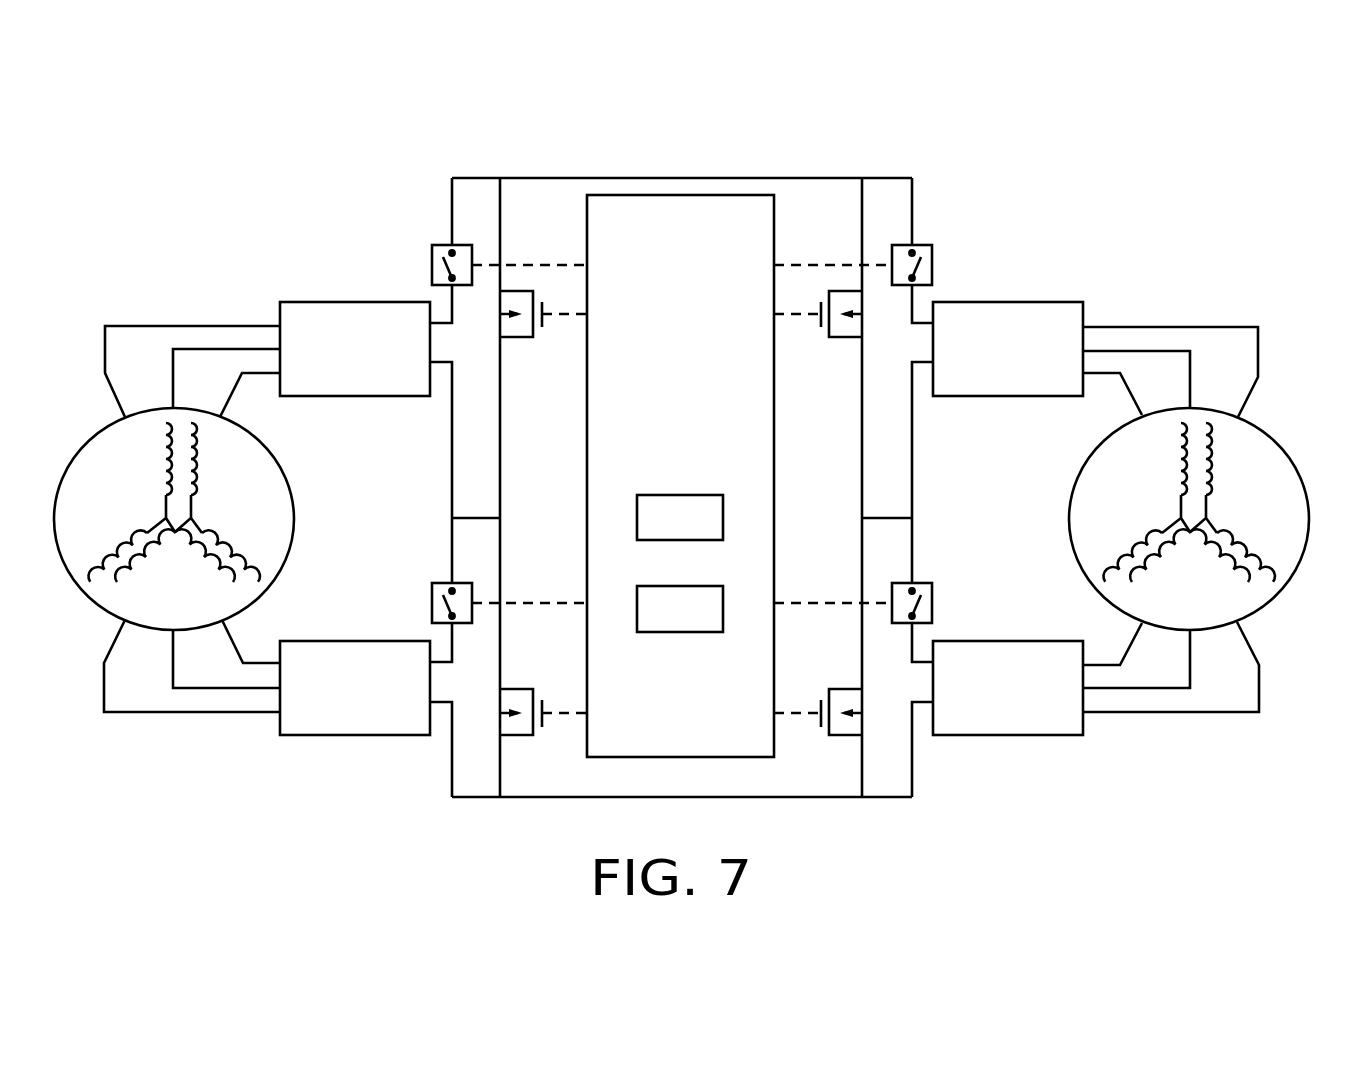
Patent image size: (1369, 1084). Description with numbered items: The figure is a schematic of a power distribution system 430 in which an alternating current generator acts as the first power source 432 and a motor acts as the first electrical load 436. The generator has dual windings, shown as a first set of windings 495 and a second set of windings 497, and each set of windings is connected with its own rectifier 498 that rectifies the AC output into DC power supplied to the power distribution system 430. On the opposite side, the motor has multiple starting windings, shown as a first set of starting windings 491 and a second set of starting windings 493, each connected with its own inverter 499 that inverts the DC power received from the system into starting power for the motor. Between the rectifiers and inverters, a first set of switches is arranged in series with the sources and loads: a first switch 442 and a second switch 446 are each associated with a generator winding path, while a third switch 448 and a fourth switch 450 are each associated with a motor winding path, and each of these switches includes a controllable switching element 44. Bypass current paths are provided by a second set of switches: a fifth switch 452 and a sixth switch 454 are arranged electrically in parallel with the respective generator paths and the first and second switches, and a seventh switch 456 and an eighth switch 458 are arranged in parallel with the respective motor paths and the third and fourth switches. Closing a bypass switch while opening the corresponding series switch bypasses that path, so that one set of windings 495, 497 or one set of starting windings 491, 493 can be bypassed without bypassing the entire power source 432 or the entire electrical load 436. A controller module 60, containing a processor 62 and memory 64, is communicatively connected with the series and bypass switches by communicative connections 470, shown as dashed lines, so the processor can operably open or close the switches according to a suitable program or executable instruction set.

The power distribution system 430 is at (702, 86).
The first power source 432 is at (209, 492).
The first electrical load 436 is at (1176, 487).
The controllable switching element 44 is at (681, 431).
The first switch 442 is at (432, 262).
The second switch 446 is at (432, 601).
The third switch 448 is at (932, 262).
The fourth switch 450 is at (932, 601).
The fifth switch 452 is at (523, 352).
The sixth switch 454 is at (526, 756).
The seventh switch 456 is at (838, 355).
The eighth switch 458 is at (836, 756).
The communicative connections 470 is at (583, 310).
The controller module 60 is at (700, 450).
The processor 62 is at (680, 517).
The memory 64 is at (680, 609).
The first set of starting windings 491 is at (1176, 507).
The second set of starting windings 493 is at (1202, 470).
The first set of windings 495 is at (188, 504).
The second set of windings 497 is at (168, 490).
The rectifier 498 is at (355, 518).
The inverter 499 is at (1008, 518).